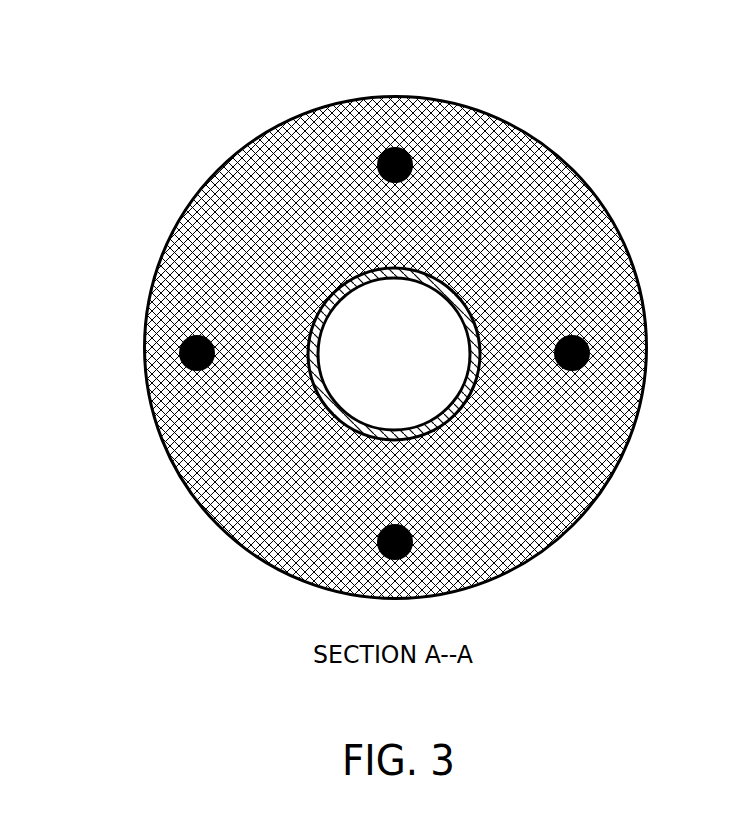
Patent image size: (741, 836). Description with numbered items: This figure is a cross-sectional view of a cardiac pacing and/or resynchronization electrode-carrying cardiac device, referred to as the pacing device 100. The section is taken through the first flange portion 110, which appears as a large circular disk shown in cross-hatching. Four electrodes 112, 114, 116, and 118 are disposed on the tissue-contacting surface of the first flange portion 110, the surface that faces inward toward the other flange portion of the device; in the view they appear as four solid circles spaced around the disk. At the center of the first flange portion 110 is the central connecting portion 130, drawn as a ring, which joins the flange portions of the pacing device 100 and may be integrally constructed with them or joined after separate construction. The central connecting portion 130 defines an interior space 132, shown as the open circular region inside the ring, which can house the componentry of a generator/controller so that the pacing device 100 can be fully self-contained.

The pacing device 100 is at (386, 328).
The first flange portion 110 is at (202, 190).
The electrode 112 is at (180, 355).
The electrode 114 is at (378, 548).
The electrode 116 is at (588, 343).
The electrode 118 is at (385, 150).
The central connecting portion 130 is at (313, 318).
The interior space 132 is at (394, 354).